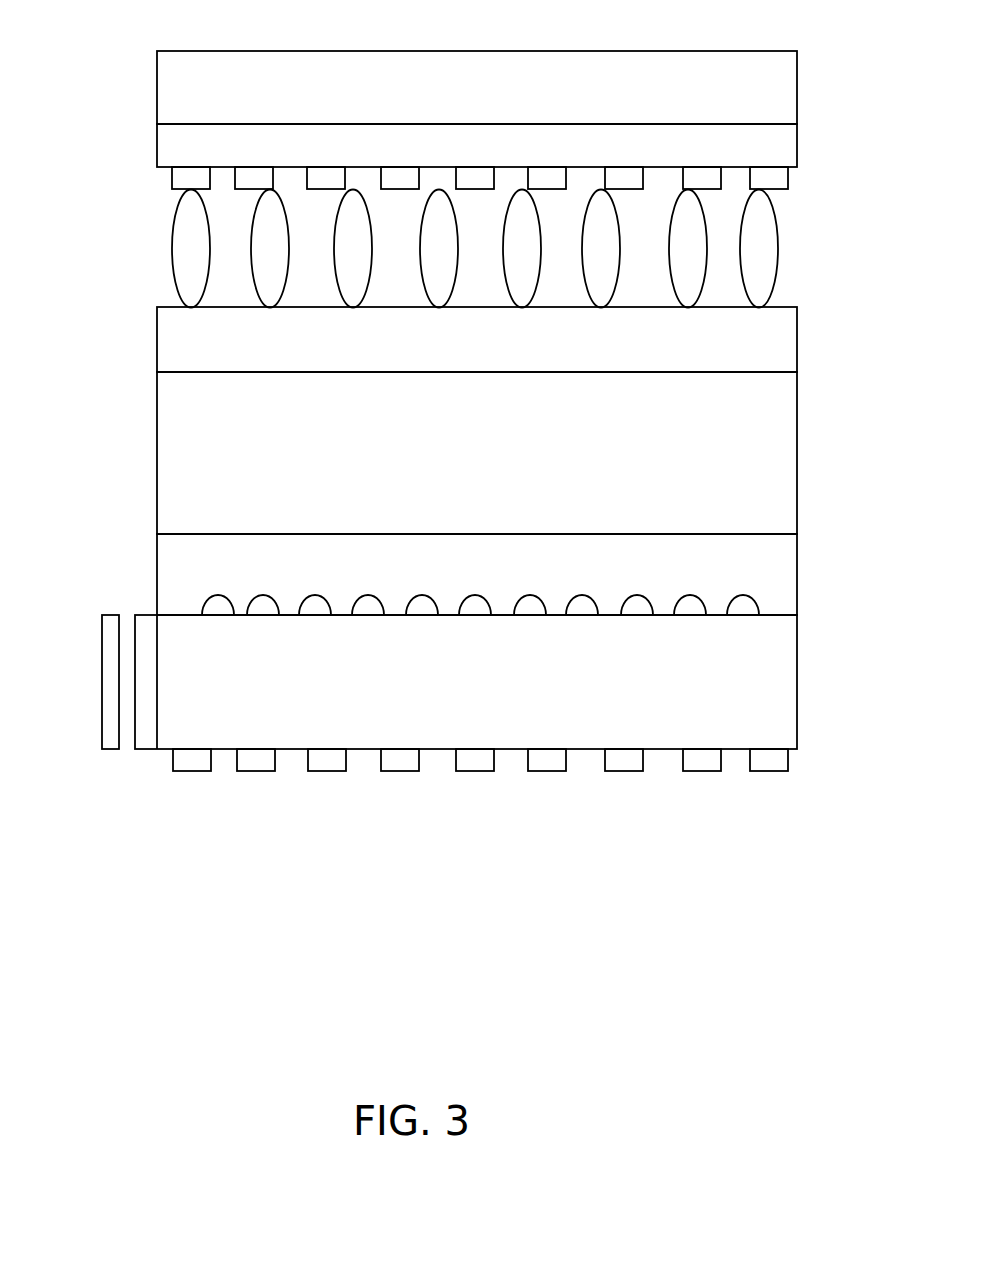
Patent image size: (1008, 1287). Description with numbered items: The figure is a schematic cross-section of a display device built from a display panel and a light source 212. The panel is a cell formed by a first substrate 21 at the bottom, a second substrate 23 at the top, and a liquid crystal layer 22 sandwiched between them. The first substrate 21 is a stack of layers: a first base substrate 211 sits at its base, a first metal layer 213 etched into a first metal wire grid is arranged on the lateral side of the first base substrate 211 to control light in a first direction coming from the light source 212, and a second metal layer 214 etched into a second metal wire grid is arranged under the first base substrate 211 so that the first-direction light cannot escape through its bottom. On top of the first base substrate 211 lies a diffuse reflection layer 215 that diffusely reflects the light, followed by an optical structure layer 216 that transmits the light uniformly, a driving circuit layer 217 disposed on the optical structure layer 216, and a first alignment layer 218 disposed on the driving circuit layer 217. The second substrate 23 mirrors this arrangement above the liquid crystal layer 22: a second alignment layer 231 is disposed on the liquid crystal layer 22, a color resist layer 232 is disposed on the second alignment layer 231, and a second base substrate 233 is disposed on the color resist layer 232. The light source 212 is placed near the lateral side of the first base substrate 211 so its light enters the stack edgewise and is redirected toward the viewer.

The first substrate 21 is at (463, 692).
The liquid crystal layer 22 is at (767, 250).
The second substrate 23 is at (519, 514).
The first base substrate 211 is at (773, 685).
The light source 212 is at (108, 690).
The first metal layer 213 is at (147, 725).
The second metal layer 214 is at (777, 760).
The diffuse reflection layer 215 is at (742, 605).
The optical structure layer 216 is at (775, 562).
The driving circuit layer 217 is at (773, 460).
The first alignment layer 218 is at (773, 340).
The second alignment layer 231 is at (778, 178).
The color resist layer 232 is at (780, 147).
The second base substrate 233 is at (780, 82).